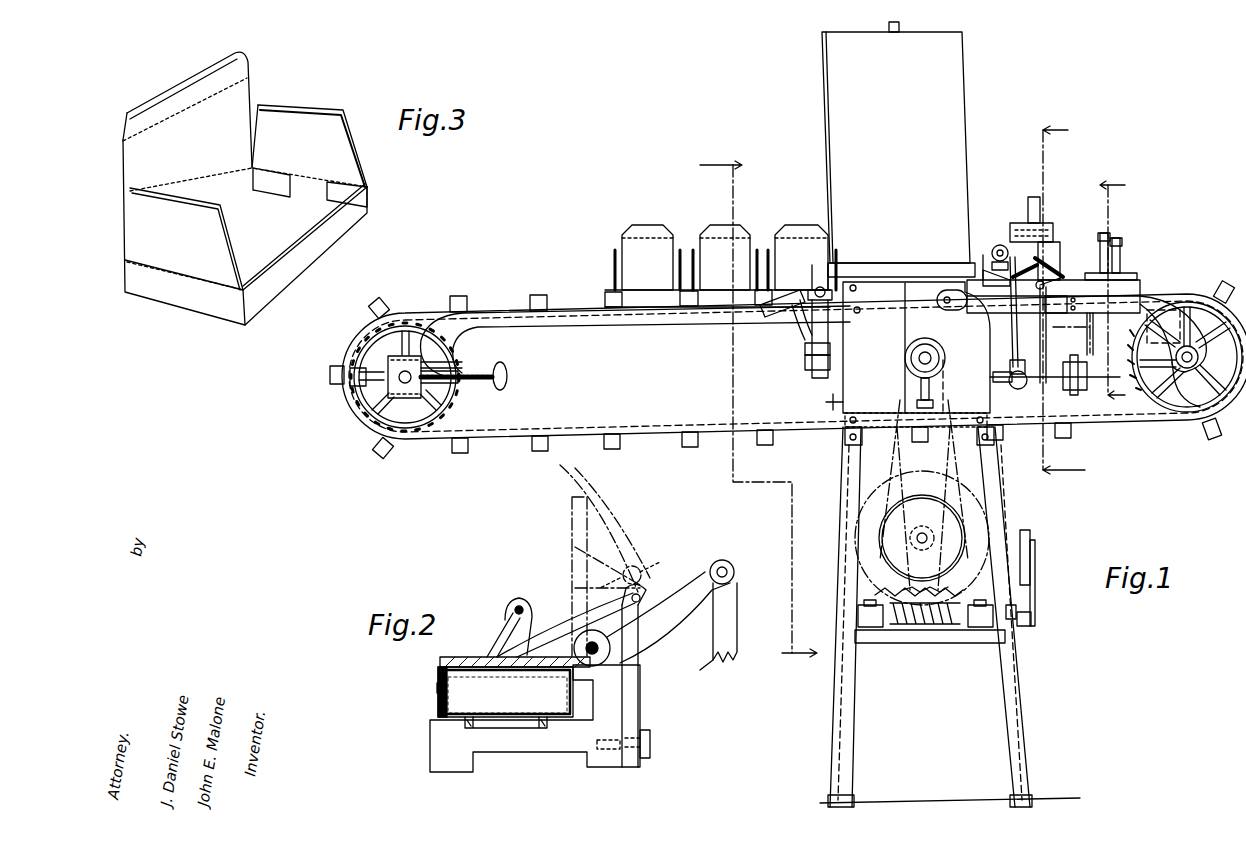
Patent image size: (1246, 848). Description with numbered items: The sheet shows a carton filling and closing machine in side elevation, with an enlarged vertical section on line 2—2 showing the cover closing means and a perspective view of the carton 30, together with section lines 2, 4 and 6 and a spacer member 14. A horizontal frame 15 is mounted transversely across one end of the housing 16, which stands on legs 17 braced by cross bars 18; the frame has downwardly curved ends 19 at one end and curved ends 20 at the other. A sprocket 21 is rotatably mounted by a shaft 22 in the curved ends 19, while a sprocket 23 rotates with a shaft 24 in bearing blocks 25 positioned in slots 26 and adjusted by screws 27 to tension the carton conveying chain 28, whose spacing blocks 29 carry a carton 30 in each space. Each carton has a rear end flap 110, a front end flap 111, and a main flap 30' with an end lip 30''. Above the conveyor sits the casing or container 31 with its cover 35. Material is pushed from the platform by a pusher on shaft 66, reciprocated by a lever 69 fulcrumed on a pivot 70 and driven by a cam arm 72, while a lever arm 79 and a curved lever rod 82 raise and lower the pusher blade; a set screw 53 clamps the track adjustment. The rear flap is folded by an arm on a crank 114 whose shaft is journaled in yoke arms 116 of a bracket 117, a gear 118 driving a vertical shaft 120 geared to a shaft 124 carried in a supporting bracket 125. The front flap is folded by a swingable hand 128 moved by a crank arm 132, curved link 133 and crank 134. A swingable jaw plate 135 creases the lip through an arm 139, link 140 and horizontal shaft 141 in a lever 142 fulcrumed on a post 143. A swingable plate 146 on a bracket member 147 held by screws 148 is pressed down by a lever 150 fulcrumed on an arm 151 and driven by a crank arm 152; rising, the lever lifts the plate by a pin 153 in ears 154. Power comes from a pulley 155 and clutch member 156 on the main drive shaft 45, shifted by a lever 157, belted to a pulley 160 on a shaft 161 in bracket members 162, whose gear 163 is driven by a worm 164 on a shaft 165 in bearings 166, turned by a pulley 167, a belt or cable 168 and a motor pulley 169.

In FIG. 1, the spacer plate 14 is at (688, 273).
In FIG. 2, the horizontal frame 15 is at (570, 748).
In FIG. 1, the horizontal frame 15 is at (683, 319).
In FIG. 1, the housing 16 is at (916, 354).
In FIG. 1, the legs 17 is at (855, 686).
In FIG. 1, the cross bars 18 is at (947, 646).
In FIG. 1, the downwardly curved ends 19 is at (1185, 357).
In FIG. 1, the downwardly curved ends 20 is at (455, 331).
In FIG. 1, the sprocket 21 is at (1208, 294).
In FIG. 1, the shaft 22 is at (1198, 358).
In FIG. 1, the sprocket 23 is at (368, 346).
In FIG. 1, the shaft 24 is at (403, 388).
In FIG. 1, the bearing blocks 25 is at (432, 389).
In FIG. 1, the slots 26 is at (350, 386).
In FIG. 1, the screws 27 is at (500, 382).
In FIG. 1, the carton conveying chain 28 is at (500, 435).
In FIG. 1, the cross members or spacing blocks 29 is at (535, 295).
In FIG. 3, the carton 30 is at (245, 232).
In FIG. 1, the carton 30 is at (717, 318).
In FIG. 3, the main flap 30' is at (270, 118).
In FIG. 2, the main flap 30' is at (503, 680).
In FIG. 1, the main flap 30' is at (725, 257).
In FIG. 3, the end lip or flange 30'' is at (203, 105).
In FIG. 2, the end lip or flange 30'' is at (497, 683).
In FIG. 1, the end lip or flange 30'' is at (704, 232).
In FIG. 1, the casing or container 31 is at (832, 156).
In FIG. 1, the cover 35 is at (822, 36).
In FIG. 1, the main drive shaft 45 is at (940, 371).
In FIG. 1, the set screw 53 is at (826, 403).
In FIG. 1, the shaft 66 is at (820, 288).
In FIG. 1, the lever 69 is at (812, 352).
In FIG. 1, the pivot 70 is at (807, 369).
In FIG. 1, the cam arm 72 is at (805, 356).
In FIG. 1, the lever arm 79 is at (777, 317).
In FIG. 1, the curved lever rod 82 is at (793, 320).
In FIG. 3, the rear end flap 110 is at (186, 239).
In FIG. 1, the rear end flap 110 is at (622, 269).
In FIG. 3, the front end flap 111 is at (310, 156).
In FIG. 1, the front end flap 111 is at (1039, 286).
In FIG. 1, the crank 114 is at (1005, 245).
In FIG. 1, the yoke arms 116 is at (994, 258).
In FIG. 1, the bracket 117 is at (975, 273).
In FIG. 1, the gear 118 is at (1002, 250).
In FIG. 1, the vertical shaft 120 is at (1008, 356).
In FIG. 1, the shaft 124 is at (1020, 390).
In FIG. 1, the supporting bracket 125 is at (1003, 386).
In FIG. 1, the swingable plate or hand 128 is at (1050, 265).
In FIG. 1, the crank arm 132 is at (1053, 297).
In FIG. 1, the curved link 133 is at (1046, 353).
In FIG. 1, the crank 134 is at (1028, 386).
In FIG. 1, the swingable jaw plate 135 is at (1053, 236).
In FIG. 1, the arm 139 is at (1032, 218).
In FIG. 1, the link 140 is at (1040, 221).
In FIG. 1, the horizontal shaft 141 is at (1090, 346).
In FIG. 1, the lever 142 is at (1072, 367).
In FIG. 1, the supporting post 143 is at (1080, 381).
In FIG. 2, the swingable plate 146 is at (570, 534).
In FIG. 2, the bracket member 147 is at (635, 686).
In FIG. 2, the screws 148 is at (650, 750).
In FIG. 2, the lever 150 is at (602, 527).
In FIG. 2, the arm 151 is at (650, 616).
In FIG. 2, the crank arm 152 is at (713, 662).
In FIG. 2, the pin 153 is at (519, 606).
In FIG. 2, the ears 154 is at (500, 623).
In FIG. 1, the pulley 155 is at (925, 348).
In FIG. 1, the clutch member 156 is at (930, 352).
In FIG. 1, the lever 157 is at (905, 334).
In FIG. 1, the pulley 160 is at (953, 533).
In FIG. 1, the shaft 161 is at (922, 533).
In FIG. 1, the bracket members 162 is at (942, 589).
In FIG. 1, the gear 163 is at (880, 597).
In FIG. 1, the worm 164 is at (922, 629).
In FIG. 1, the shaft 165 is at (1010, 622).
In FIG. 1, the bearings 166 is at (872, 629).
In FIG. 1, the pulley 167 is at (1031, 618).
In FIG. 1, the belt or cable 168 is at (1035, 586).
In FIG. 1, the pulley 169 is at (1031, 543).
In FIG. 1, the section line 2 is at (1112, 291).
In FIG. 1, the section line 4 is at (758, 416).
In FIG. 1, the section line 6 is at (1087, 305).